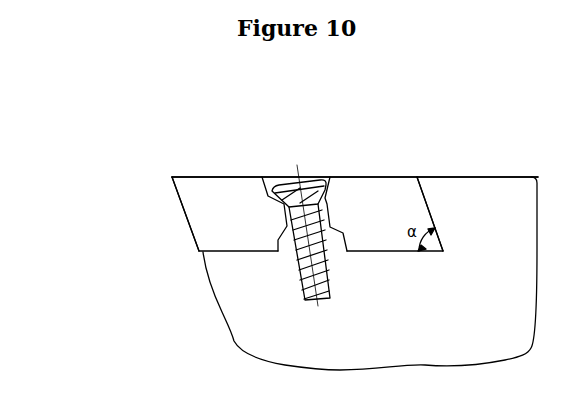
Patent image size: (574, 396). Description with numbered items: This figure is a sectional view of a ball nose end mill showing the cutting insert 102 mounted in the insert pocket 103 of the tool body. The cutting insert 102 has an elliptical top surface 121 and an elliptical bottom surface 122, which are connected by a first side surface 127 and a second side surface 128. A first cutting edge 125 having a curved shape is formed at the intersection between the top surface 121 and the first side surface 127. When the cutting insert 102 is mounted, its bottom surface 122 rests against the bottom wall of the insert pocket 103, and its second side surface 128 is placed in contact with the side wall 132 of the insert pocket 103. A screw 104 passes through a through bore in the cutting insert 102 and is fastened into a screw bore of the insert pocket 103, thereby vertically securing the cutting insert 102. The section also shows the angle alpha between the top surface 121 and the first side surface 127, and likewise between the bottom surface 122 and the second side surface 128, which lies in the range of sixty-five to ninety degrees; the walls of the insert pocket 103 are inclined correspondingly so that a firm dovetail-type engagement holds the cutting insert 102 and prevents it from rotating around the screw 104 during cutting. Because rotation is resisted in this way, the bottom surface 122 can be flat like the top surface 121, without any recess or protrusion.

The cutting insert 102 is at (109, 203).
The insert pocket 103 is at (223, 265).
The screw 104 is at (332, 288).
The top surface 121 is at (210, 176).
The bottom surface 122 is at (240, 253).
The first cutting edge 125 is at (172, 177).
The first side surface 127 is at (193, 239).
The second side surface 128 is at (413, 192).
The side wall 132 is at (426, 201).